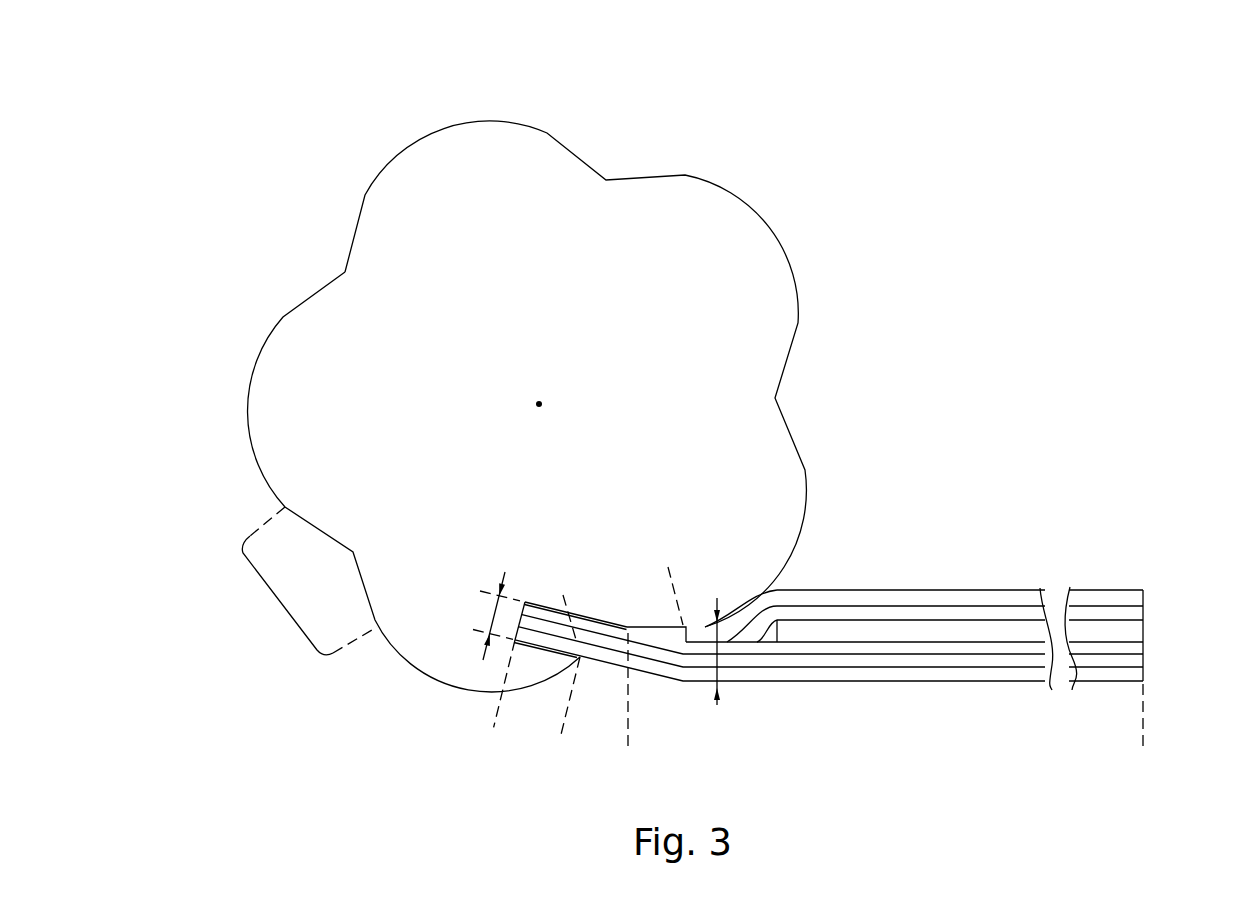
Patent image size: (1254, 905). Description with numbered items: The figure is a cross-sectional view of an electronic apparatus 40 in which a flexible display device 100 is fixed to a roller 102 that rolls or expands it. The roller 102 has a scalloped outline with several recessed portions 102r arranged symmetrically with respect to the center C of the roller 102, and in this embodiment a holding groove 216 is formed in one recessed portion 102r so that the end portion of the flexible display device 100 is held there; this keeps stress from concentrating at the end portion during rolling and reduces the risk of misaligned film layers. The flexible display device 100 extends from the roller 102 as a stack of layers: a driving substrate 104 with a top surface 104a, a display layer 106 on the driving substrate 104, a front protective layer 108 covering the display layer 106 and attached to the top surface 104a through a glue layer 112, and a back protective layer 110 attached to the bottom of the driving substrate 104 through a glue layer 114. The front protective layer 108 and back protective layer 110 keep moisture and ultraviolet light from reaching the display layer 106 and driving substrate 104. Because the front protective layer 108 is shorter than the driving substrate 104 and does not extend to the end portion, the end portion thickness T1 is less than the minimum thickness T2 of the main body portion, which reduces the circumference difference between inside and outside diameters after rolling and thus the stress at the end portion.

The electronic apparatus 40 is at (118, 58).
The roller 102 is at (573, 177).
The recessed portion 102r is at (283, 608).
The center C is at (551, 398).
The flexible display device 100 is at (867, 618).
The driving substrate 104 is at (1143, 647).
The top surface 104a is at (712, 644).
The display layer 106 is at (1143, 632).
The front protective layer 108 is at (1143, 598).
The back protective layer 110 is at (1143, 675).
The glue layer 112 is at (1143, 613).
The glue layer 114 is at (1143, 660).
The holding groove 216 is at (523, 657).
The thickness of the end portion T1 is at (488, 616).
The minimum thickness of the main body portion T2 is at (718, 661).